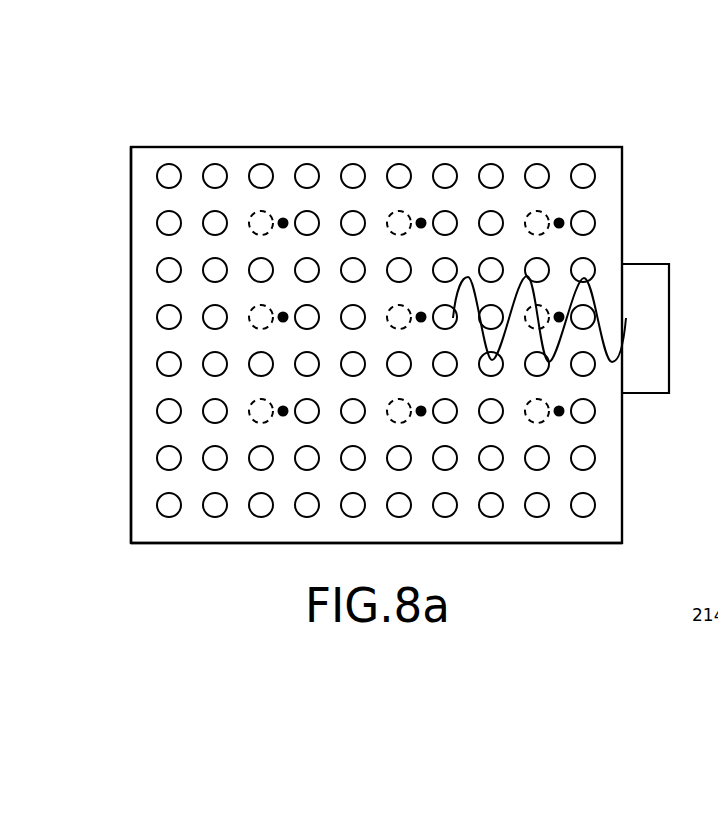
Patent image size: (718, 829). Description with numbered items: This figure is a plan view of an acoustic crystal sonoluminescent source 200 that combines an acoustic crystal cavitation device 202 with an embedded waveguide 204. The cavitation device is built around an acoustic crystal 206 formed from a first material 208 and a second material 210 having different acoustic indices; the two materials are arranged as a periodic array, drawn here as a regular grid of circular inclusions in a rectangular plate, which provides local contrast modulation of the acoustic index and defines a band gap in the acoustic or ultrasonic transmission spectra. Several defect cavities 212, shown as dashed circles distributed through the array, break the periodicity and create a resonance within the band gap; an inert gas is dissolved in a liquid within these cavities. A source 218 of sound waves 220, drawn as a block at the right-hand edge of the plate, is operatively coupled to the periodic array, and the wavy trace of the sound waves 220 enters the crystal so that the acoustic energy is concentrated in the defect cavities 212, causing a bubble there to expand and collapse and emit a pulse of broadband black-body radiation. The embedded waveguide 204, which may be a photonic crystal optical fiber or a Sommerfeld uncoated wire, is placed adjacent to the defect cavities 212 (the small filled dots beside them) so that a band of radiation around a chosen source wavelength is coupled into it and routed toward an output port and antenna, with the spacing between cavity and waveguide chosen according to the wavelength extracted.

The acoustic crystal sonoluminescent source 200 is at (523, 110).
The acoustic crystal cavitation device 202 is at (362, 130).
The embedded waveguide 204 is at (567, 210).
The acoustic crystal 206 is at (131, 250).
The first material 208 is at (208, 537).
The second material 210 is at (170, 457).
The defect cavity 212 is at (246, 321).
The source of sound waves 218 is at (657, 287).
The sound waves 220 is at (567, 345).